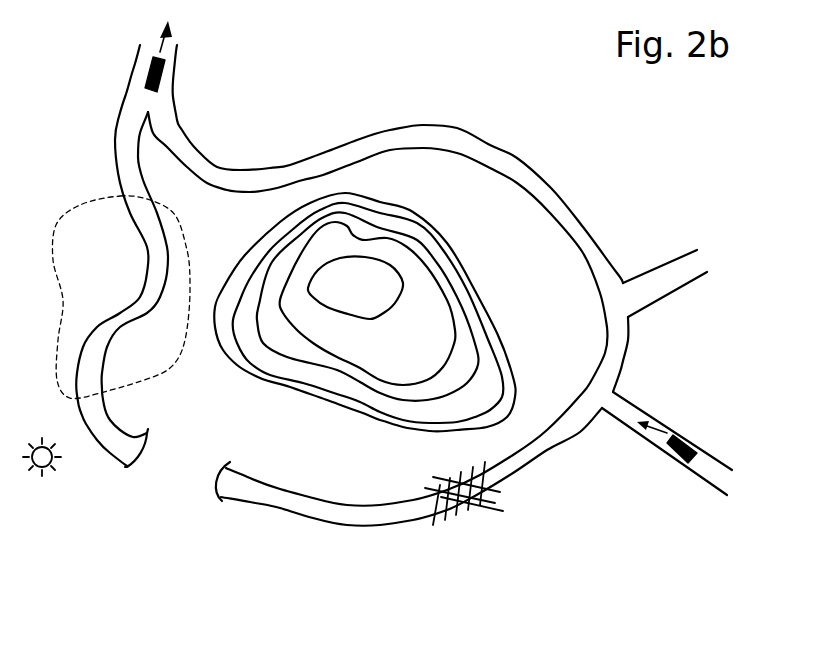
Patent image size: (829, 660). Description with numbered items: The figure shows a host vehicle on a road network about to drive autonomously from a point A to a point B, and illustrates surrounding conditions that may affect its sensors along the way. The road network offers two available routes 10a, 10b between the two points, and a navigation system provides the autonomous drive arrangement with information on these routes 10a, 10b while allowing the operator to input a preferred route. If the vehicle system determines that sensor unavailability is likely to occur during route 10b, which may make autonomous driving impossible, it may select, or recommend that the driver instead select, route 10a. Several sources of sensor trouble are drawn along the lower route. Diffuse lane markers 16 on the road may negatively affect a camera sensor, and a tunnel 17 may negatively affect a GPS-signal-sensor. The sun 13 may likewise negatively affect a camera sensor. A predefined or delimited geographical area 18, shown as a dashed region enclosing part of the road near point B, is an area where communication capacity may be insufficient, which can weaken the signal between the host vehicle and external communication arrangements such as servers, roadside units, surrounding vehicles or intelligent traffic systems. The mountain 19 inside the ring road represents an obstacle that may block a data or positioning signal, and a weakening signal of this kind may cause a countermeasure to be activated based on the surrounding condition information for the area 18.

The route 10a is at (512, 158).
The route 10b is at (307, 496).
The sun 13 is at (40, 500).
The diffuse lane markers 16 is at (472, 535).
The tunnel 17 is at (186, 520).
The predefined geographical area 18 is at (55, 198).
The mountain 19 is at (502, 320).
The point A is at (697, 418).
The point B is at (188, 83).